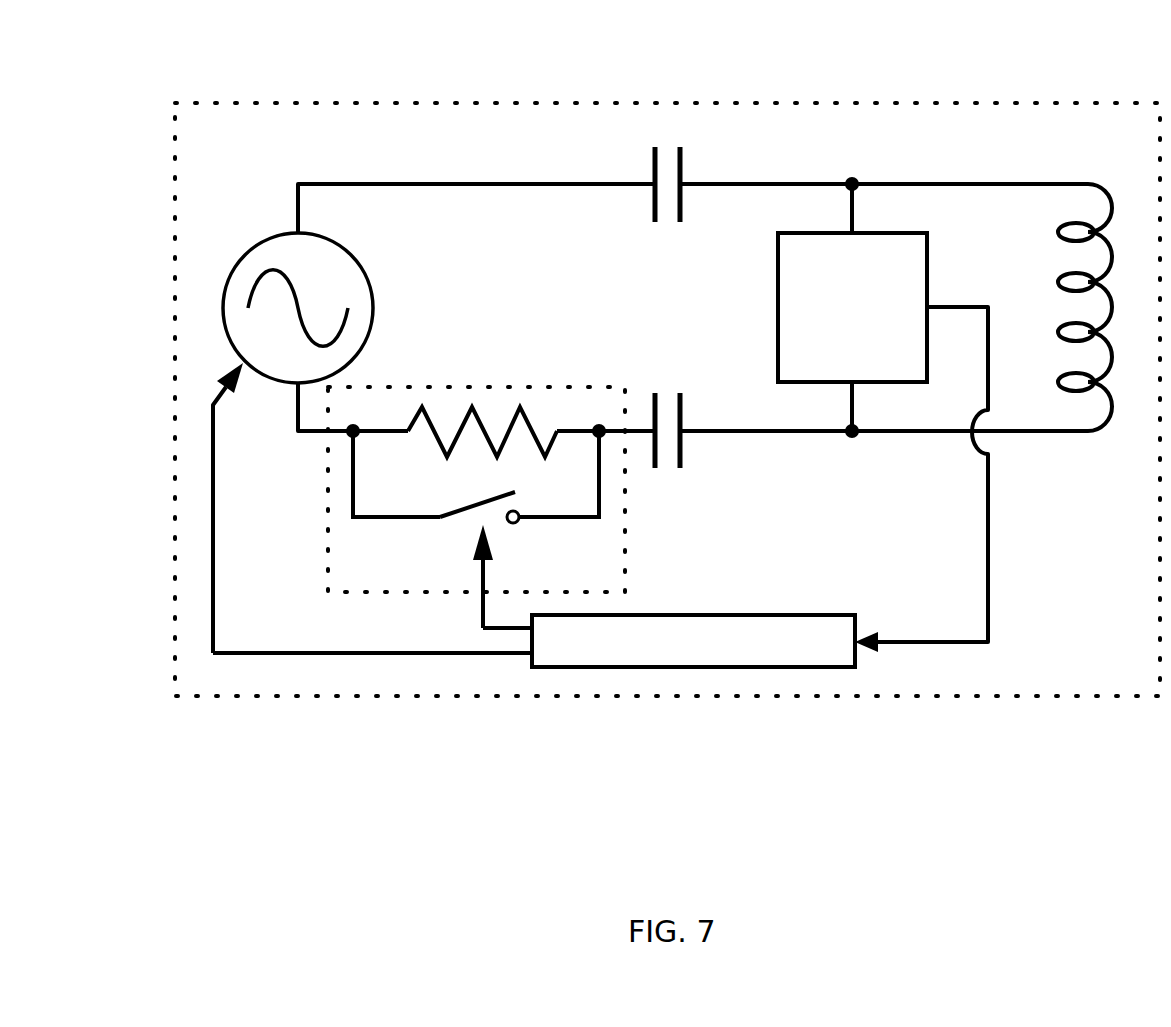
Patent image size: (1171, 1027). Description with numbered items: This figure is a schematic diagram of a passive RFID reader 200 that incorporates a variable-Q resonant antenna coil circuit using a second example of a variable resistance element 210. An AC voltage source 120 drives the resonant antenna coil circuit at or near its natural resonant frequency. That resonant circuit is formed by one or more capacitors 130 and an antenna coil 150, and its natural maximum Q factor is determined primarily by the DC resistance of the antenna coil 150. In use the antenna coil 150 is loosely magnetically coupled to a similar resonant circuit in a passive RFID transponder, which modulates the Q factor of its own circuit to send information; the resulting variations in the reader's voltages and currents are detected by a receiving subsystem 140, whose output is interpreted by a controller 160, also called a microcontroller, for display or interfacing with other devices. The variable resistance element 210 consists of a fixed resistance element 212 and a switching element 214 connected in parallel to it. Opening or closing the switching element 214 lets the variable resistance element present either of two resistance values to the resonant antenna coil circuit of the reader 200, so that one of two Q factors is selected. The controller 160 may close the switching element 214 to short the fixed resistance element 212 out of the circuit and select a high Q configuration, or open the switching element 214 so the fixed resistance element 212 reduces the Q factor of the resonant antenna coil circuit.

The AC voltage source 120 is at (245, 235).
The capacitors 130 is at (667, 383).
The receiving subsystem 140 is at (888, 222).
The antenna coil 150 is at (1087, 455).
The controller 160 is at (667, 677).
The passive RFID reader 200 is at (940, 712).
The variable resistance element 210 is at (390, 603).
The fixed resistance element 212 is at (452, 405).
The switching element 214 is at (513, 535).